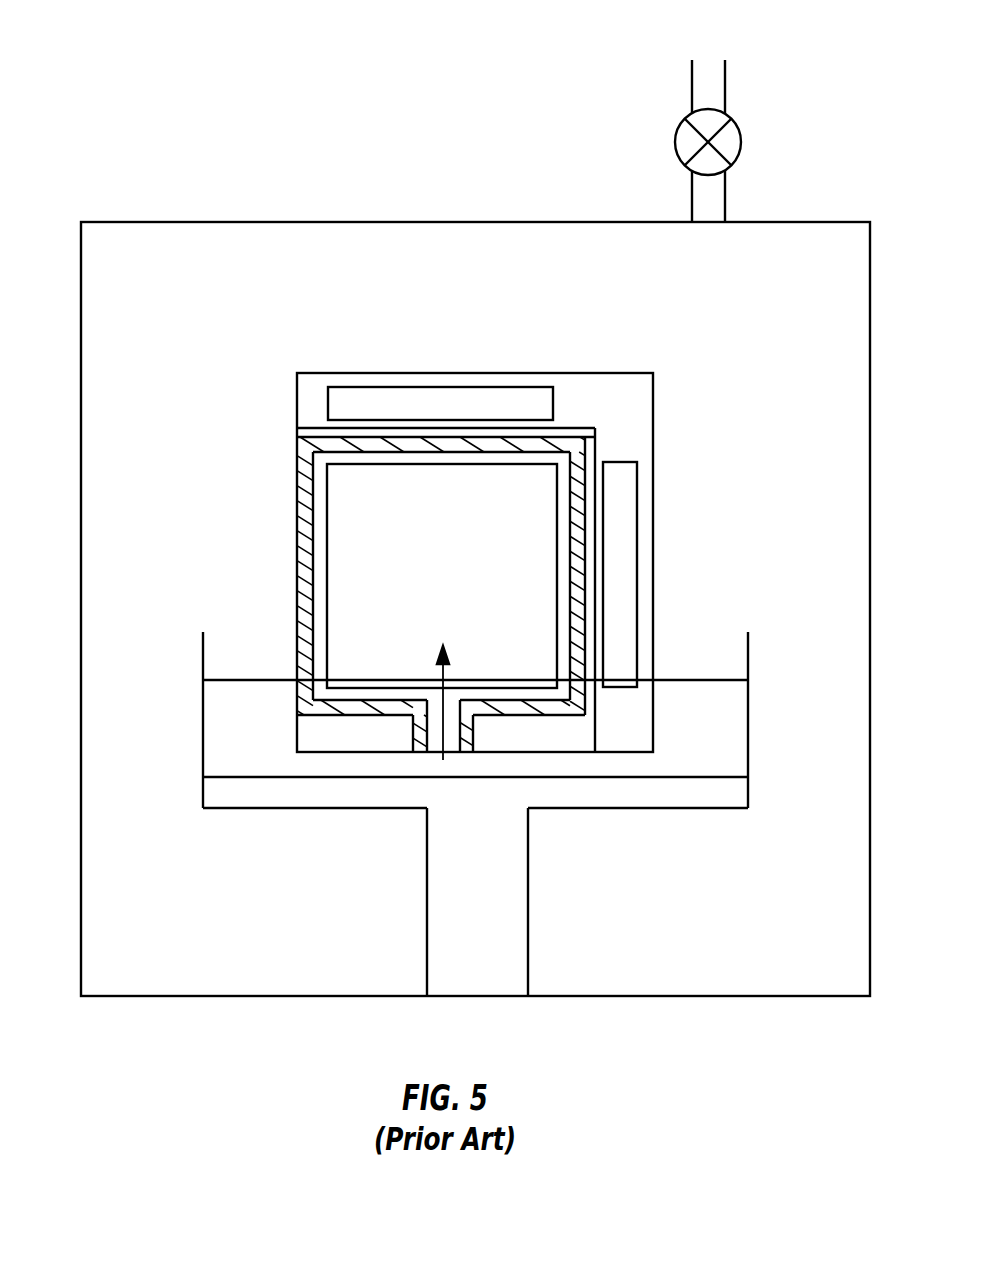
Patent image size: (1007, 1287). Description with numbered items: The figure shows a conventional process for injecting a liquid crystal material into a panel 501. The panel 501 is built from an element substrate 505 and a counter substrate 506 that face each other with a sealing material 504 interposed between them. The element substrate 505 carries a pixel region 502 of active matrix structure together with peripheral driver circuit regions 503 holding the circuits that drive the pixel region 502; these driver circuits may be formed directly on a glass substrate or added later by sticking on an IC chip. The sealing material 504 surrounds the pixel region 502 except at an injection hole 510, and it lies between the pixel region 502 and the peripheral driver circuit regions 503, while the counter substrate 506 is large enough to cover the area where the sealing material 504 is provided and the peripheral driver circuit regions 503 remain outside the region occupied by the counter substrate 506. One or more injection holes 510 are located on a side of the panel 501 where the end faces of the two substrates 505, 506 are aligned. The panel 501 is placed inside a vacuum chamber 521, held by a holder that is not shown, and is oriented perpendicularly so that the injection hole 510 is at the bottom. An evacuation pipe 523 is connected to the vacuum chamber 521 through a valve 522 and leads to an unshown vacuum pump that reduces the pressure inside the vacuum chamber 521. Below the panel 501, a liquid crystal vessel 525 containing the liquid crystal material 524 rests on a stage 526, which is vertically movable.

The panel 501 is at (475, 543).
The pixel region 502 is at (388, 576).
The peripheral driver circuit regions 503 is at (634, 472).
The sealing material 504 is at (402, 592).
The element substrate 505 is at (506, 377).
The counter substrate 506 is at (410, 412).
The injection hole 510 is at (411, 729).
The vacuum chamber 521 is at (475, 589).
The valve 522 is at (742, 129).
The evacuation pipe 523 is at (749, 122).
The liquid crystal material 524 is at (475, 722).
The liquid crystal vessel 525 is at (520, 718).
The stage 526 is at (520, 902).